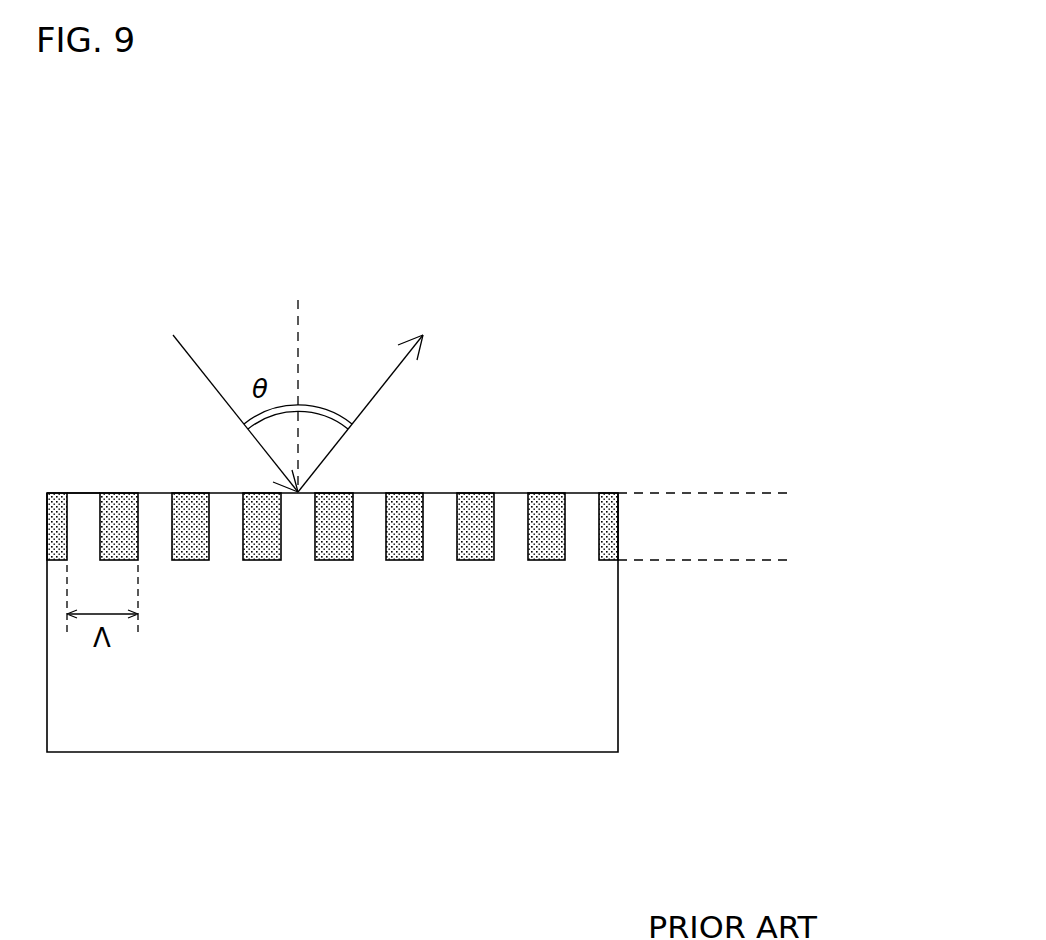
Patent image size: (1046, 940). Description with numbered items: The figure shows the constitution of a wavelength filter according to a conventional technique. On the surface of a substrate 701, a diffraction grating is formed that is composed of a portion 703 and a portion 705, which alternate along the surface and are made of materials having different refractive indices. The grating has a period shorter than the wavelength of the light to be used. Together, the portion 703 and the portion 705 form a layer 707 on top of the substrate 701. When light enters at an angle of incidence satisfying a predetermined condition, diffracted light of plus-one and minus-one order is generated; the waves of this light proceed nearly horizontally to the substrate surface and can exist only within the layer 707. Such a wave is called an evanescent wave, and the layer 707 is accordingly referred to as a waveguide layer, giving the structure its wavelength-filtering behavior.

The substrate 701 is at (588, 658).
The portion 703 is at (82, 513).
The portion 705 is at (118, 513).
The layer 707 is at (800, 493).